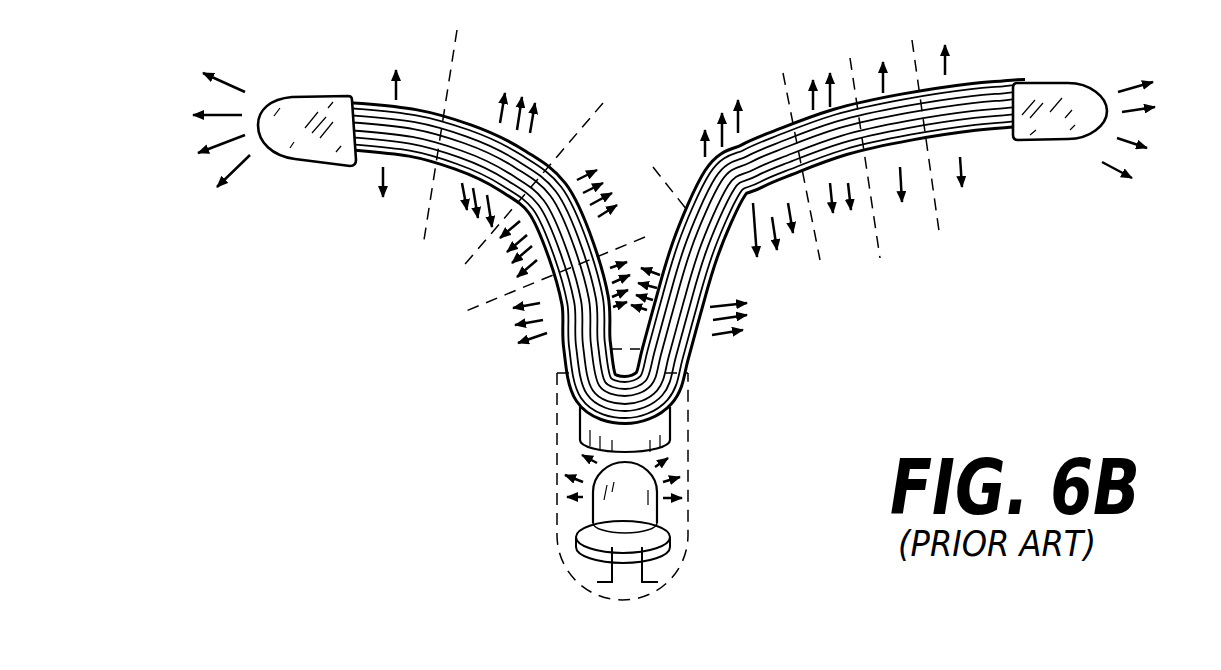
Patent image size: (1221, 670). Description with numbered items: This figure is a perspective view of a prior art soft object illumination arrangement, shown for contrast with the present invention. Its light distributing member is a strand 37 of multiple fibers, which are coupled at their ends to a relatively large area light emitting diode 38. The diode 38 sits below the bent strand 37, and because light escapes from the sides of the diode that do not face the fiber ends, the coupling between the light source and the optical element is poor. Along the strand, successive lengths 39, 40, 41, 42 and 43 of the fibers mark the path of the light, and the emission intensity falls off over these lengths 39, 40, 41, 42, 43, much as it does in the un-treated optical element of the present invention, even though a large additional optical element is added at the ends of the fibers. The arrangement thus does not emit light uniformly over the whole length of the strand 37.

The strand of multiple fibers 37 is at (713, 183).
The light emitting diode 38 is at (648, 513).
The length of the fibers 39 is at (760, 340).
The length of the fibers 40 is at (803, 315).
The length of the fibers 41 is at (853, 253).
The length of the fibers 42 is at (920, 240).
The length of the fibers 43 is at (973, 218).